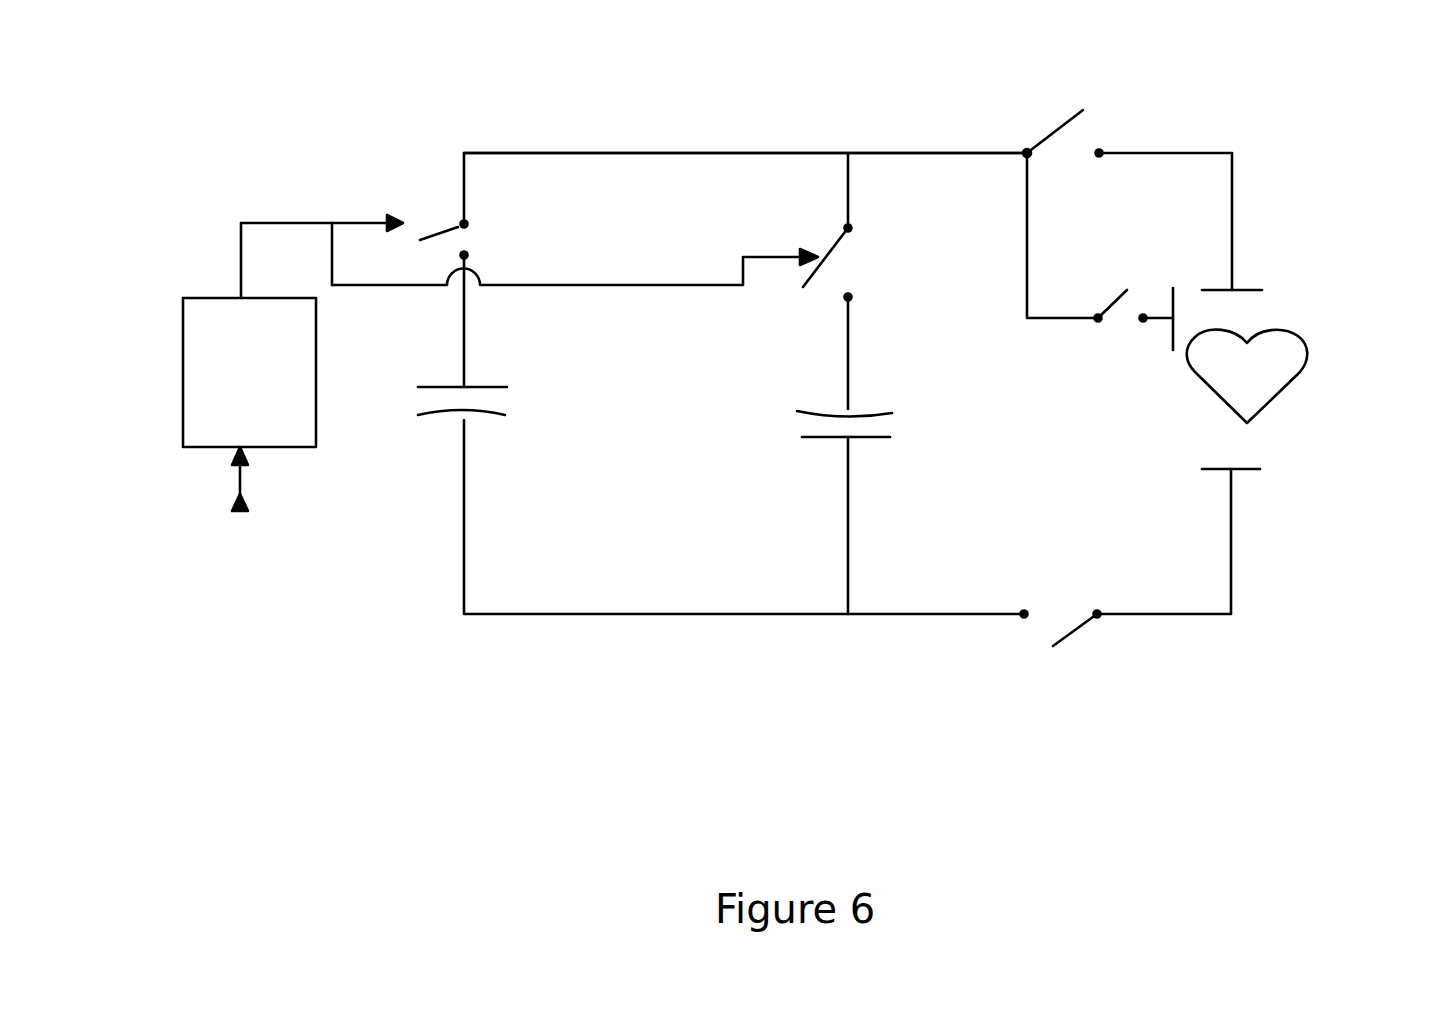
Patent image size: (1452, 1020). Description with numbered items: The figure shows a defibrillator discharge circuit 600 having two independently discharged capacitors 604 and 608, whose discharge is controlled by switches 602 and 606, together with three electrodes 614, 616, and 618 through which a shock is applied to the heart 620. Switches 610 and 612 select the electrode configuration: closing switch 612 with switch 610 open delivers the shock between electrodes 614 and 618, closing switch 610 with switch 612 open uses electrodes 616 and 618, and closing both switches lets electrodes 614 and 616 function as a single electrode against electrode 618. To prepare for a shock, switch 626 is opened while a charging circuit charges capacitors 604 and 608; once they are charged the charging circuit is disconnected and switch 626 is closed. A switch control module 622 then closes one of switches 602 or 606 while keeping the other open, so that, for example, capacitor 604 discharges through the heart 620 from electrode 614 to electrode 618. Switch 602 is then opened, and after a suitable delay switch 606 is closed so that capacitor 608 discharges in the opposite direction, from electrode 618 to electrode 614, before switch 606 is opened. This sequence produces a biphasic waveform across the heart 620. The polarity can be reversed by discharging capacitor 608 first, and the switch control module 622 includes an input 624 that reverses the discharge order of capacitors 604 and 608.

The discharge circuit 600 is at (436, 114).
The switch 602 is at (445, 230).
The capacitor 604 is at (480, 386).
The switch 606 is at (832, 258).
The capacitor 608 is at (868, 412).
The switch 610 is at (1080, 120).
The switch 612 is at (1116, 302).
The electrode 614 is at (1165, 335).
The electrode 616 is at (1247, 282).
The electrode 618 is at (1253, 471).
The heart 620 is at (1293, 367).
The switch control module 622 is at (203, 297).
The input 624 is at (238, 498).
The switch 626 is at (1075, 637).